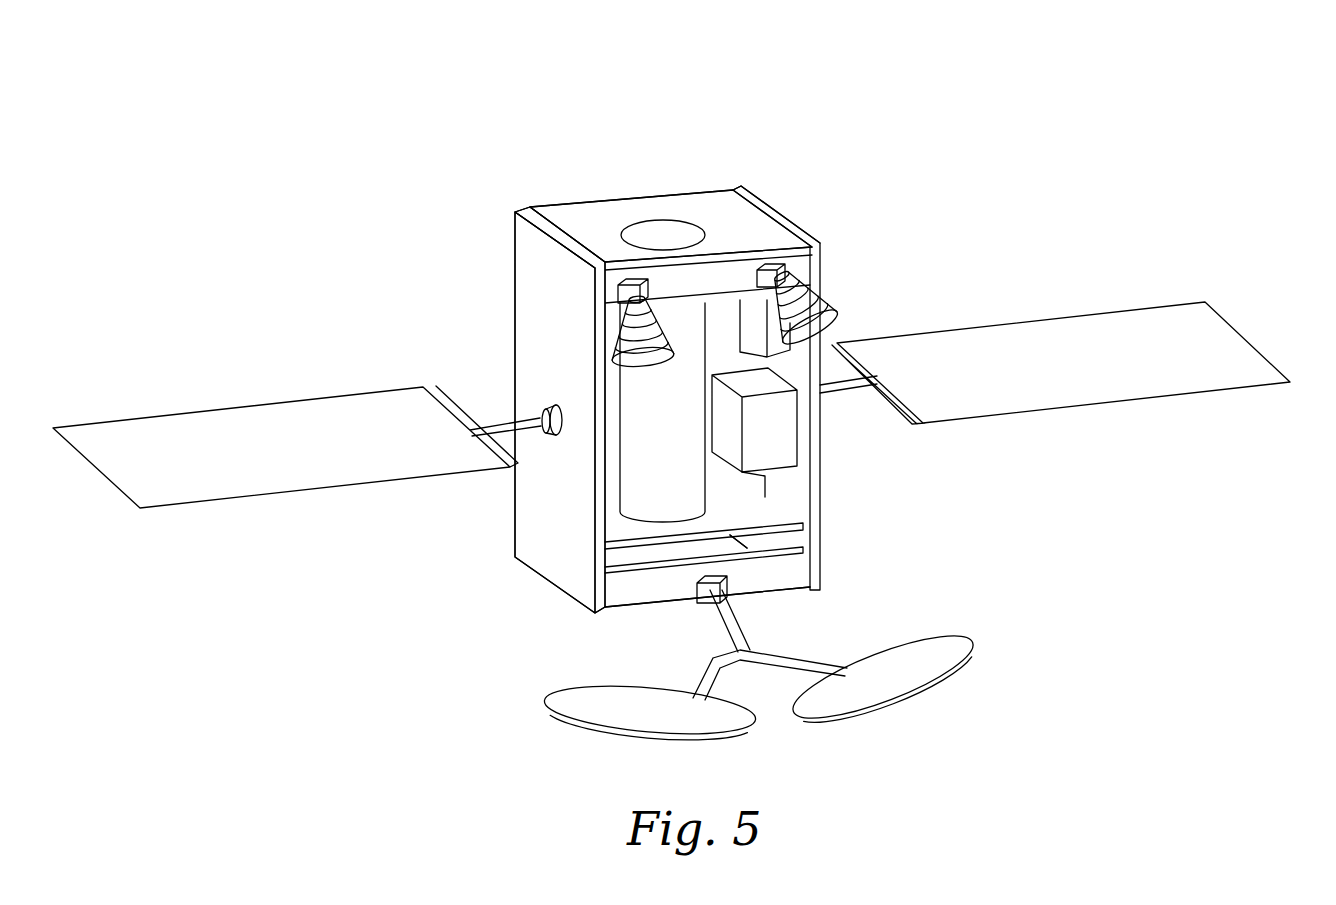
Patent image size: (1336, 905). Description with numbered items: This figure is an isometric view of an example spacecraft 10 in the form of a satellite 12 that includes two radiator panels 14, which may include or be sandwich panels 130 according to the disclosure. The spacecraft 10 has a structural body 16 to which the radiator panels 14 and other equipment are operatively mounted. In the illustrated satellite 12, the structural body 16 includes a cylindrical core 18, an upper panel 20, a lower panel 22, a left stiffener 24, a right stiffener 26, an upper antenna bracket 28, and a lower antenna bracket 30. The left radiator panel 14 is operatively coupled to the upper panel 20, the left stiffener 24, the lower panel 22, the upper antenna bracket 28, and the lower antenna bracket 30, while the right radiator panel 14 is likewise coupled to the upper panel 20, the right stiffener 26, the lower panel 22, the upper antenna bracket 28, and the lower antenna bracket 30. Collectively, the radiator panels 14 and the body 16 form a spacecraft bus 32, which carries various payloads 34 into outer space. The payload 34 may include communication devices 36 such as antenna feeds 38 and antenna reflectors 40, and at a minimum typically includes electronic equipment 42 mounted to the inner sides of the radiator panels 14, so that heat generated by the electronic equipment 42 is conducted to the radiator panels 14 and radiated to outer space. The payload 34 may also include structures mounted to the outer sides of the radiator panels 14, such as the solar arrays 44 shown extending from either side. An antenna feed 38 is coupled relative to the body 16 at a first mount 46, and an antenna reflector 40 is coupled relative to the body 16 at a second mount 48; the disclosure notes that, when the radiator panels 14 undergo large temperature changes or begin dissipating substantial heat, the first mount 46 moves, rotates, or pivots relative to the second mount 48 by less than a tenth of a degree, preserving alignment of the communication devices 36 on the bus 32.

The spacecraft 10 is at (940, 113).
The satellite 12 is at (915, 115).
The radiator panels 14 is at (513, 300).
The structural body 16 is at (667, 192).
The cylindrical core 18 is at (707, 350).
The upper panel 20 is at (612, 207).
The lower panel 22 is at (790, 520).
The left stiffener 24 is at (607, 520).
The right stiffener 26 is at (745, 505).
The upper antenna bracket 28 is at (740, 252).
The lower antenna bracket 30 is at (770, 590).
The spacecraft bus 32 is at (713, 105).
The payload 34 is at (548, 170).
The communication devices 36 is at (573, 155).
The antenna feed 38 is at (610, 340).
The antenna reflector 40 is at (590, 688).
The electronic equipment 42 is at (790, 352).
The solar arrays 44 is at (205, 408).
The first mount 46 is at (643, 291).
The second mount 48 is at (695, 590).
The sandwich panels 130 is at (512, 365).